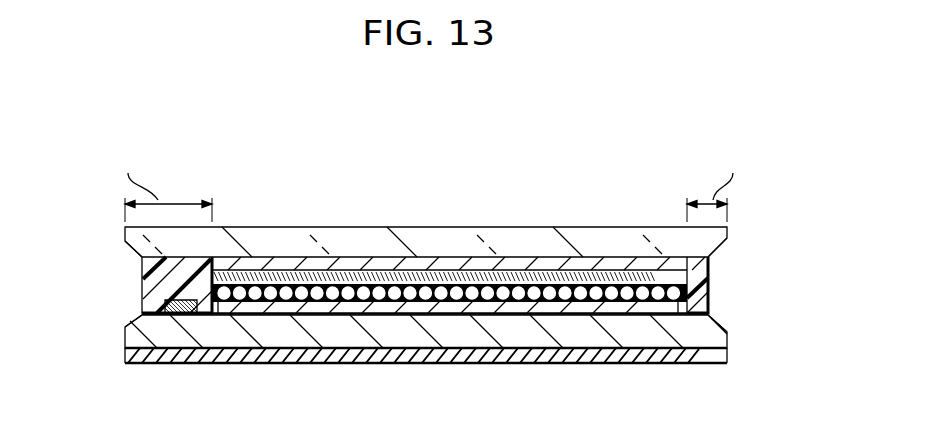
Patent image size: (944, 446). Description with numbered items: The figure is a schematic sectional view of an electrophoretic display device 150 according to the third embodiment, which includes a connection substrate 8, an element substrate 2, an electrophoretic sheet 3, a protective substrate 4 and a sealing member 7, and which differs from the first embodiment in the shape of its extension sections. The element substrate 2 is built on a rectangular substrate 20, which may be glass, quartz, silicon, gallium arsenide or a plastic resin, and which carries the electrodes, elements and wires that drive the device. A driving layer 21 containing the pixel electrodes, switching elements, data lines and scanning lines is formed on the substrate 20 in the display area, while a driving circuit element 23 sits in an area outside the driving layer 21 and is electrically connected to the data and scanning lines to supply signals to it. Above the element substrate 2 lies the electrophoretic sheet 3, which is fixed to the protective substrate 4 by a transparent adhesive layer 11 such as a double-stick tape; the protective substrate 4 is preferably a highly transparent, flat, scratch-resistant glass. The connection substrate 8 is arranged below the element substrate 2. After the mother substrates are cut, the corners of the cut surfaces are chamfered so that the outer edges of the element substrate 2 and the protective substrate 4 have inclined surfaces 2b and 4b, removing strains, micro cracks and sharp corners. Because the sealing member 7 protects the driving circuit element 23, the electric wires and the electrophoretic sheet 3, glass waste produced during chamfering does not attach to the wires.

The electrophoretic display device 150 is at (457, 274).
The protective substrate 4 is at (430, 203).
The inclined surface 4b is at (128, 253).
The transparent adhesive layer 11 is at (420, 258).
The electrophoretic sheet 3 is at (589, 263).
The sealing member 7 is at (140, 287).
The driving circuit element 23 is at (178, 313).
The driving layer 21 is at (413, 305).
The substrate 20 is at (333, 338).
The inclined surface 2b is at (127, 318).
The element substrate 2 is at (435, 363).
The connection substrate 8 is at (730, 343).